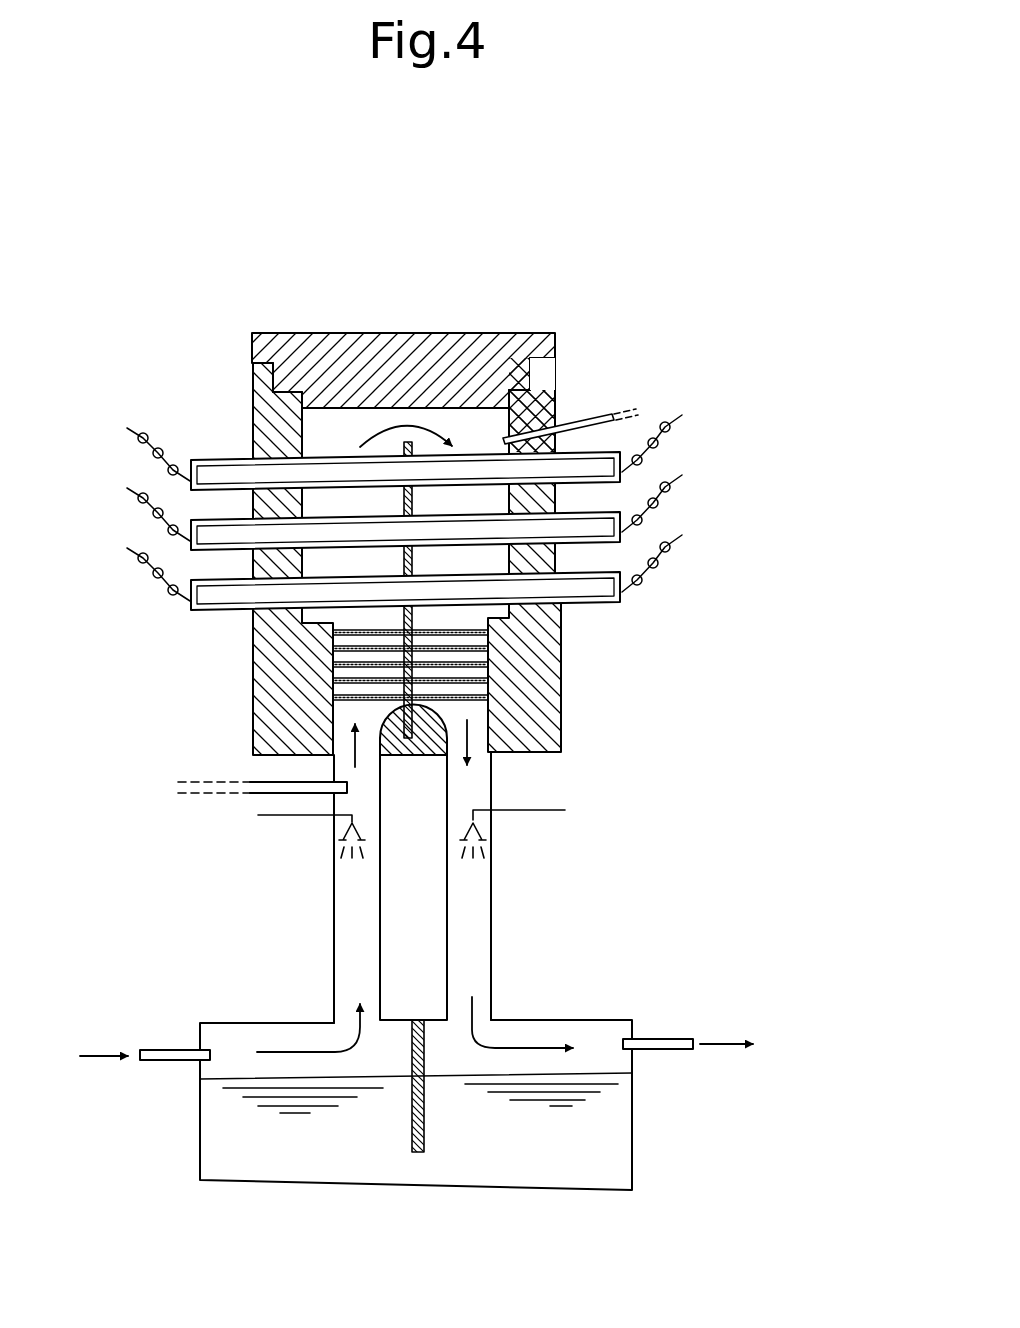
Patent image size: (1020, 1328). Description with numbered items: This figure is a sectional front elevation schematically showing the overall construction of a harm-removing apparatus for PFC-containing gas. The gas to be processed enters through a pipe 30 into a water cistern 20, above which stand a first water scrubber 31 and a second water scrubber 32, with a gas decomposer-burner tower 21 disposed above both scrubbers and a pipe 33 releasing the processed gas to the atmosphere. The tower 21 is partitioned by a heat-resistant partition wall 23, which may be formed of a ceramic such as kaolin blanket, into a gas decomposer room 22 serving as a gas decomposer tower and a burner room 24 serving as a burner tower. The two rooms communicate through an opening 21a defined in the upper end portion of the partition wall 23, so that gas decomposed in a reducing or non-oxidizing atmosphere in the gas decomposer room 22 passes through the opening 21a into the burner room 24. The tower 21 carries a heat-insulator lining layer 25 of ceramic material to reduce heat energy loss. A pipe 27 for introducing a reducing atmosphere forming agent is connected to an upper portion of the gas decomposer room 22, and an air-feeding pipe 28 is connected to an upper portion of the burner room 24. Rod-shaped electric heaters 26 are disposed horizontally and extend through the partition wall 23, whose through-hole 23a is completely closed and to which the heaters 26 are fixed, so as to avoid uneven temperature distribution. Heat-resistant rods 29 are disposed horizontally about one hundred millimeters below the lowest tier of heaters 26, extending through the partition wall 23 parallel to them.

The water cistern 20 is at (620, 1125).
The gas decomposer-burner tower 21 is at (481, 319).
The opening 21a is at (400, 418).
The gas decomposer room 22 is at (347, 505).
The partition wall 23 is at (558, 413).
The through-hole 23a is at (493, 628).
The burner room 24 is at (563, 605).
The heat-insulator lining layer 25 is at (538, 662).
The electric heater 26 is at (587, 463).
The pipe for introducing a reducing atmosphere forming agent 27 is at (278, 785).
The air-feeding pipe 28 is at (413, 503).
The heat-resistant rod 29 is at (563, 713).
The pipe for introducing a PFC-containing gas 30 is at (177, 1052).
The first water scrubber 31 is at (355, 938).
The second water scrubber 32 is at (485, 935).
The pipe for releasing a processed gas 33 is at (663, 1040).